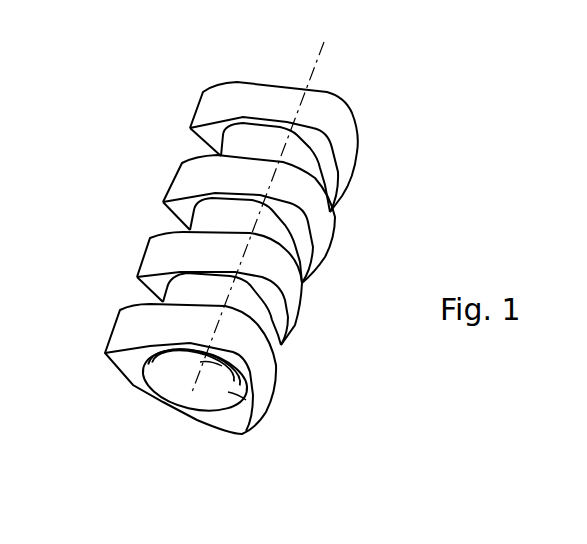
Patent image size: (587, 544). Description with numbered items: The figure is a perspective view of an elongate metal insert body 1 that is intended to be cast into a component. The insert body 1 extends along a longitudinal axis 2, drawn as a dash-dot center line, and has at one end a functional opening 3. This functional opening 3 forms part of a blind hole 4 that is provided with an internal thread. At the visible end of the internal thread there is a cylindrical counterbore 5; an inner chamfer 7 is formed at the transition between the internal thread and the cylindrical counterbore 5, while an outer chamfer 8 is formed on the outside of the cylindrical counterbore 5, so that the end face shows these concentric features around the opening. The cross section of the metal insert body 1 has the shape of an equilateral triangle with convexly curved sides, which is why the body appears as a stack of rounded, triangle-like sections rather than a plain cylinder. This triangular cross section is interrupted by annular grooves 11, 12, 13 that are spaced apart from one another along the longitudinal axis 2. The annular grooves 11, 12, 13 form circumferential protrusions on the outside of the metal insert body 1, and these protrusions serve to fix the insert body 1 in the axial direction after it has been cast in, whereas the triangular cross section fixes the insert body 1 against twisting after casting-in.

The metal insert body 1 is at (393, 109).
The longitudinal axis 2 is at (183, 422).
The functional opening 3 is at (162, 393).
The blind hole 4 is at (212, 368).
The cylindrical counterbore 5 is at (238, 398).
The inner chamfer 7 is at (207, 390).
The outer chamfer 8 is at (203, 410).
The annular groove 11 is at (197, 150).
The annular groove 12 is at (167, 225).
The annular groove 13 is at (130, 302).